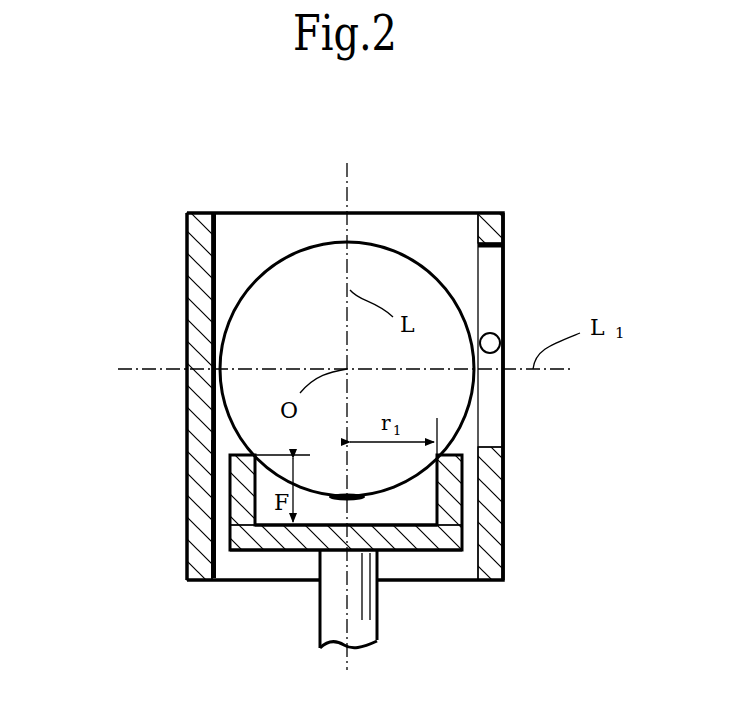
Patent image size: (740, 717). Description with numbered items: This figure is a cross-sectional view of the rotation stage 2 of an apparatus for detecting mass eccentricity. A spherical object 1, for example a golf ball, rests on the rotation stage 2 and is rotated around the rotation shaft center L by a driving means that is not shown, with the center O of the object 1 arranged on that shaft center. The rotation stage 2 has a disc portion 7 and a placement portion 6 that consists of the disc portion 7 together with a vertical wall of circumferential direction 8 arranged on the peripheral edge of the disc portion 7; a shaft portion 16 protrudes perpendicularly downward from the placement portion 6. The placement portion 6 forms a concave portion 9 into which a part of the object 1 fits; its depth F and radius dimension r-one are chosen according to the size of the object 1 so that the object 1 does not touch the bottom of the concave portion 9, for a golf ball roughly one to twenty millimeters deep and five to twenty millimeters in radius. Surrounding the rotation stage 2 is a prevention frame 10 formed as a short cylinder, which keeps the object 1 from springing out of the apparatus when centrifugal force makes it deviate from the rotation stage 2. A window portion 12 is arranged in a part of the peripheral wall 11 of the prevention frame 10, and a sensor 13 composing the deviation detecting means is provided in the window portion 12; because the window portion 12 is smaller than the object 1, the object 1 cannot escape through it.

The spherical object 1 is at (414, 254).
The rotation stage 2 is at (229, 562).
The placement portion 6 is at (468, 488).
The disc portion 7 is at (403, 535).
The vertical wall of circumferential direction 8 is at (232, 492).
The concave portion 9 is at (437, 497).
The prevention frame 10 is at (183, 339).
The peripheral wall 11 is at (187, 290).
The window portion 12 is at (505, 410).
The sensor 13 is at (494, 332).
The shaft portion 16 is at (320, 603).